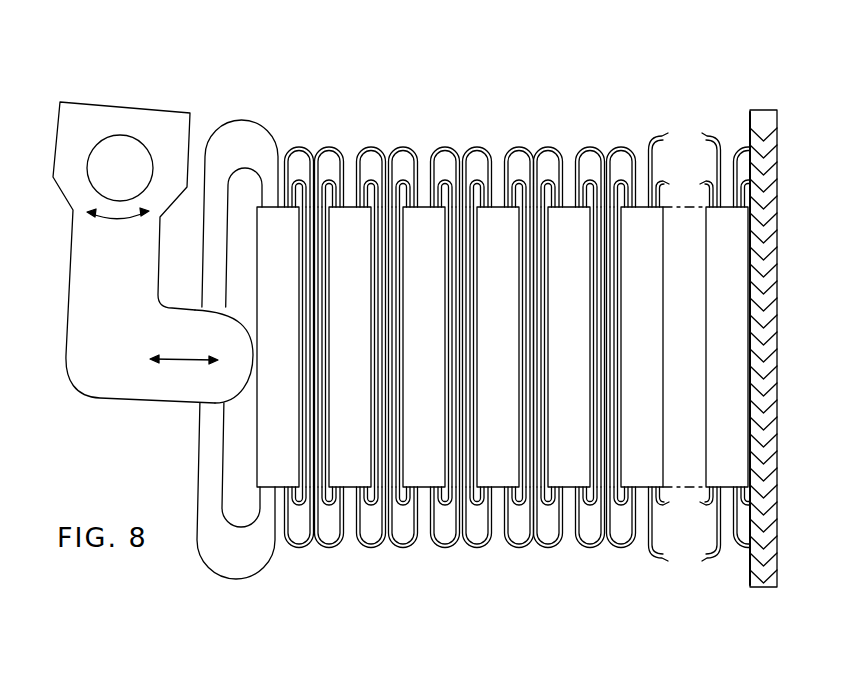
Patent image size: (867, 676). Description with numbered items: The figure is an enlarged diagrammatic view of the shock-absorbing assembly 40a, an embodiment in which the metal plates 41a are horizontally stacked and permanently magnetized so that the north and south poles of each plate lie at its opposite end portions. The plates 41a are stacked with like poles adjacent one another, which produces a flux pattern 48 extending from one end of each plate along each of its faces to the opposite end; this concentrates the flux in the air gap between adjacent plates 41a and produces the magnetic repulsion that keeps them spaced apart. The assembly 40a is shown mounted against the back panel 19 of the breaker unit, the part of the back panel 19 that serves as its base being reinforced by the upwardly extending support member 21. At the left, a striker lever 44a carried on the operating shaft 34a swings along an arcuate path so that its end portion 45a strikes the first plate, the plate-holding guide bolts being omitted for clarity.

The back panel 19 is at (769, 117).
The support member 21 is at (750, 134).
The pivot opening of arm 34a is at (120, 158).
The shock-absorbing assembly 40a is at (473, 343).
The metal plates 41a is at (437, 472).
The arm 44a is at (77, 318).
The arm end 45a is at (226, 388).
The flux pattern 48 is at (621, 147).